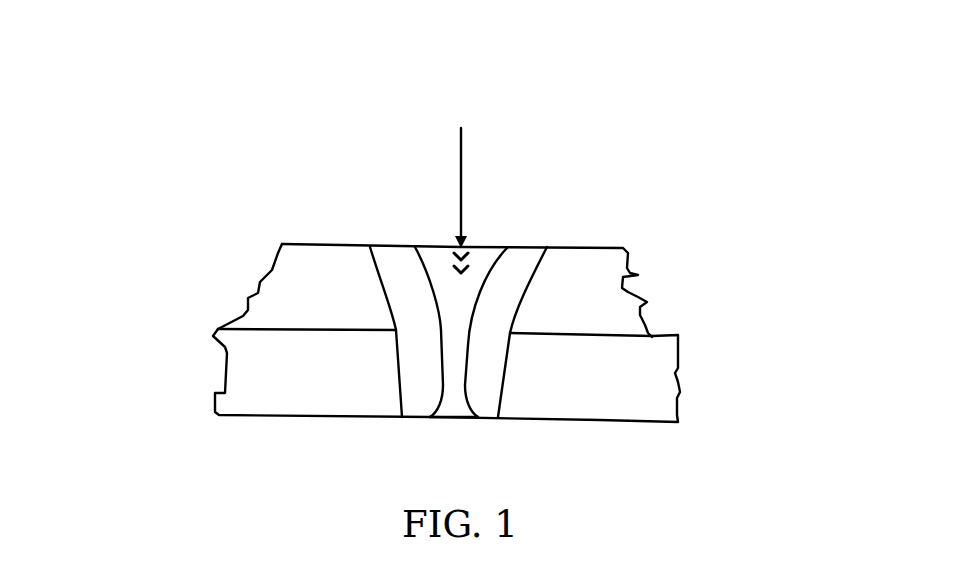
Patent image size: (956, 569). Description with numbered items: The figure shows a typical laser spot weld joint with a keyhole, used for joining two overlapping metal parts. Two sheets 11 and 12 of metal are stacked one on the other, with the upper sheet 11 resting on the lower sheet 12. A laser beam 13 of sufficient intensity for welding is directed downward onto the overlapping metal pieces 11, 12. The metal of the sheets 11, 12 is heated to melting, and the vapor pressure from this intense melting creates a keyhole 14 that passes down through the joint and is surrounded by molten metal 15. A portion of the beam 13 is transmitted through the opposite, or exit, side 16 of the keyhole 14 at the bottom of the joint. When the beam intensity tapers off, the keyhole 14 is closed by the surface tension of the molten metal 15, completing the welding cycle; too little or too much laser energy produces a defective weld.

The metal sheet 11 is at (317, 300).
The metal sheet 12 is at (308, 374).
The laser beam 13 is at (464, 156).
The keyhole 14 is at (457, 310).
The molten metal 15 is at (500, 303).
The exit side of the keyhole 16 is at (453, 408).